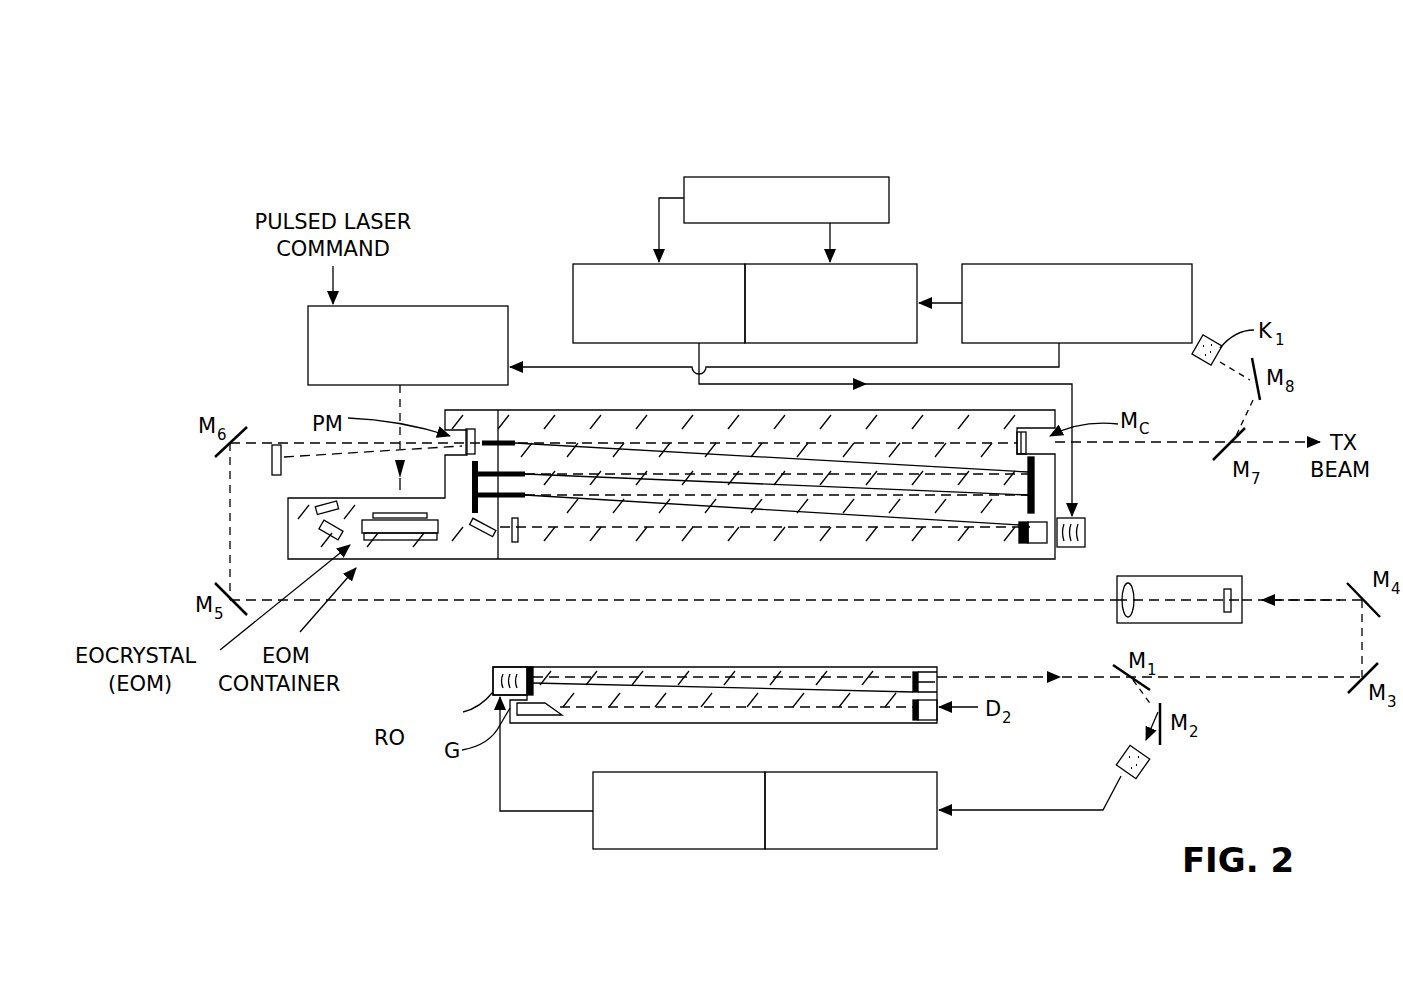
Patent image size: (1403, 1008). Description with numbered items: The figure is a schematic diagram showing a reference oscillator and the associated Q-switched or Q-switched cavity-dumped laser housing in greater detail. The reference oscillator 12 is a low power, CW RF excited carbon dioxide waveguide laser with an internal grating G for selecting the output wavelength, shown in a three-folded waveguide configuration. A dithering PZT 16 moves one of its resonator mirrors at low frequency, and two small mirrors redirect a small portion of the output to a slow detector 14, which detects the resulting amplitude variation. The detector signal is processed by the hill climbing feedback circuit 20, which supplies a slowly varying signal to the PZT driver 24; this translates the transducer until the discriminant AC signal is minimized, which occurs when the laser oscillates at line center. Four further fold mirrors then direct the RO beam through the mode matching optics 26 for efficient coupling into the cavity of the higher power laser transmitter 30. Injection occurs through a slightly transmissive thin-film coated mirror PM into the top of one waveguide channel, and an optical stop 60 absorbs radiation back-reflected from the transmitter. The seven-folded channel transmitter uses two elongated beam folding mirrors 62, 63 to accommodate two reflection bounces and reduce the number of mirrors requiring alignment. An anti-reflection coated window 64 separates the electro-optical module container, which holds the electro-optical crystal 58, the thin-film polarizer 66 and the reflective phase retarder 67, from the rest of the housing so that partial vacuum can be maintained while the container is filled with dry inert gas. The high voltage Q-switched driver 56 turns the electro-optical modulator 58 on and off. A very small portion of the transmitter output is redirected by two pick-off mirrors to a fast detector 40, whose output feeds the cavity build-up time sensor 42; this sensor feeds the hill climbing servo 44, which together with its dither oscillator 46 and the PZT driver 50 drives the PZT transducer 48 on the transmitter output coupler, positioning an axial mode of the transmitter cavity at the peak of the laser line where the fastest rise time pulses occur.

The reference oscillator 12 is at (770, 667).
The slow detector 14 is at (1152, 765).
The PZT 16 is at (493, 675).
The hill climbing feedback electronic circuit 20 is at (937, 790).
The PZT driver 24 is at (593, 790).
The mode matching optics arrangement 26 is at (1232, 576).
The laser transmitter 30 is at (1214, 274).
The fast detector 40 is at (1210, 340).
The cavity build-up time electronic circuit sensor 42 is at (1152, 264).
The HC servo 44 is at (905, 264).
The dither oscillator 46 is at (889, 198).
The PZT transducer 48 is at (1086, 518).
The PZT driver 50 is at (610, 264).
The high voltage driver 56 is at (458, 306).
The electro-optical modulator 58 is at (290, 598).
The optical stop 60 is at (272, 462).
The elongated beam folding mirror 62 is at (490, 468).
The elongated beam folding mirror 63 is at (1036, 485).
The anti-reflection thin-film coated window 64 is at (514, 545).
The thin-film polarizer 66 is at (485, 538).
The reflective phase retarder 67 is at (328, 524).